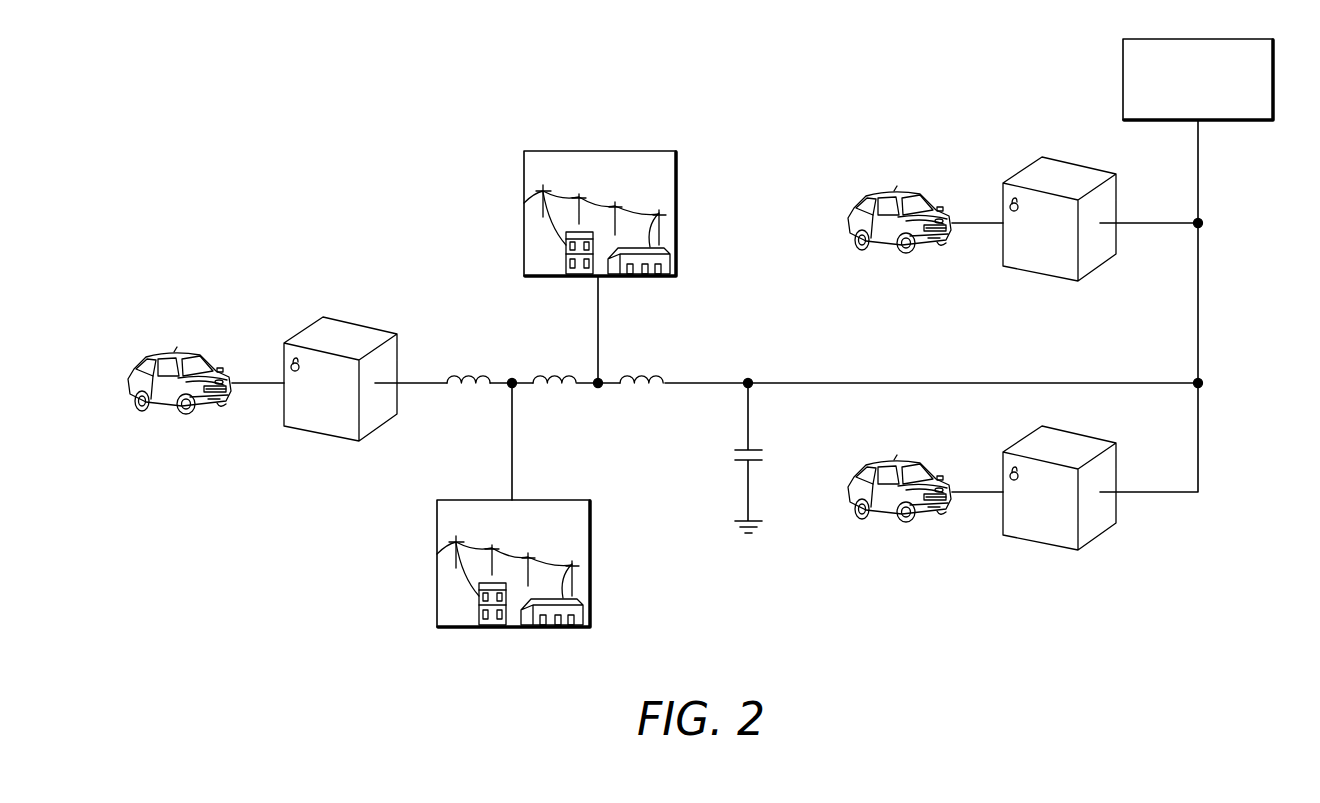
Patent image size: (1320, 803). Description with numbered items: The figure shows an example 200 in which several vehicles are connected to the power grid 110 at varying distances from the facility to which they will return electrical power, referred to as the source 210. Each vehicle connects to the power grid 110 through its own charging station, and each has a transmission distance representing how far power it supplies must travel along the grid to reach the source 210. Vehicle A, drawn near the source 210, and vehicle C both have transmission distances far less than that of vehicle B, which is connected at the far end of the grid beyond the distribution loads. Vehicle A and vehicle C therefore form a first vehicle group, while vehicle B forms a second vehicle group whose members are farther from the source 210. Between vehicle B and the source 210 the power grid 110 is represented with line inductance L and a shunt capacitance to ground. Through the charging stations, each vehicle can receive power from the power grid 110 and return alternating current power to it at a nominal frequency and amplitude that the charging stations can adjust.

The example 200 is at (121, 206).
The power grid 110 is at (1199, 277).
The source 210 is at (1265, 36).
The line inductance L is at (555, 396).
The vehicle A is at (832, 201).
The vehicle B is at (116, 368).